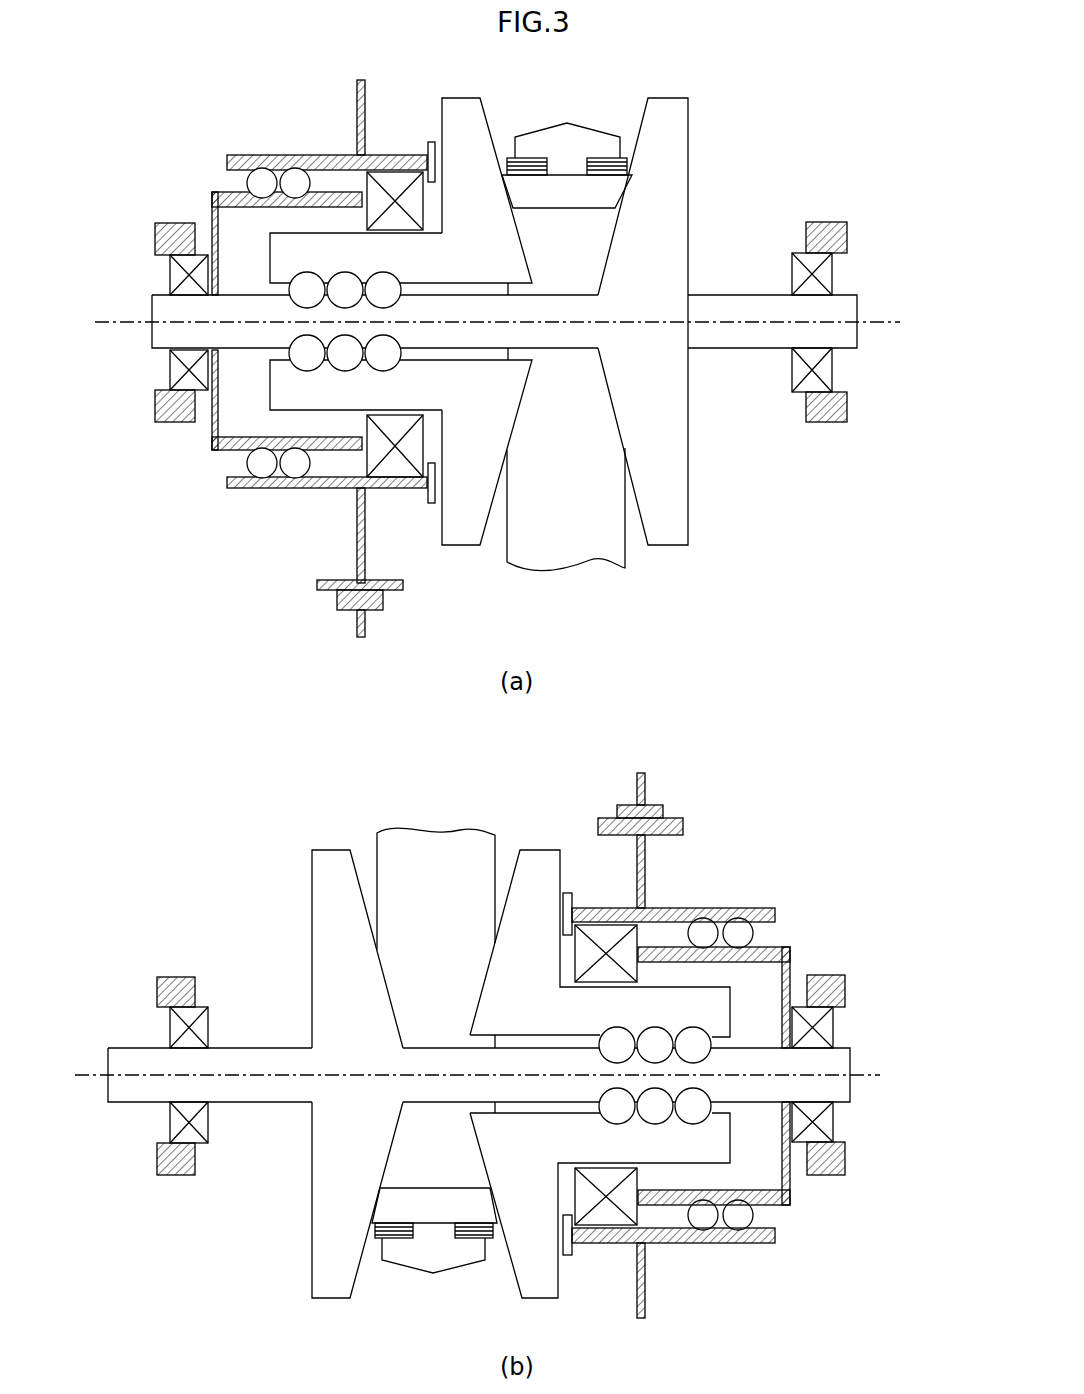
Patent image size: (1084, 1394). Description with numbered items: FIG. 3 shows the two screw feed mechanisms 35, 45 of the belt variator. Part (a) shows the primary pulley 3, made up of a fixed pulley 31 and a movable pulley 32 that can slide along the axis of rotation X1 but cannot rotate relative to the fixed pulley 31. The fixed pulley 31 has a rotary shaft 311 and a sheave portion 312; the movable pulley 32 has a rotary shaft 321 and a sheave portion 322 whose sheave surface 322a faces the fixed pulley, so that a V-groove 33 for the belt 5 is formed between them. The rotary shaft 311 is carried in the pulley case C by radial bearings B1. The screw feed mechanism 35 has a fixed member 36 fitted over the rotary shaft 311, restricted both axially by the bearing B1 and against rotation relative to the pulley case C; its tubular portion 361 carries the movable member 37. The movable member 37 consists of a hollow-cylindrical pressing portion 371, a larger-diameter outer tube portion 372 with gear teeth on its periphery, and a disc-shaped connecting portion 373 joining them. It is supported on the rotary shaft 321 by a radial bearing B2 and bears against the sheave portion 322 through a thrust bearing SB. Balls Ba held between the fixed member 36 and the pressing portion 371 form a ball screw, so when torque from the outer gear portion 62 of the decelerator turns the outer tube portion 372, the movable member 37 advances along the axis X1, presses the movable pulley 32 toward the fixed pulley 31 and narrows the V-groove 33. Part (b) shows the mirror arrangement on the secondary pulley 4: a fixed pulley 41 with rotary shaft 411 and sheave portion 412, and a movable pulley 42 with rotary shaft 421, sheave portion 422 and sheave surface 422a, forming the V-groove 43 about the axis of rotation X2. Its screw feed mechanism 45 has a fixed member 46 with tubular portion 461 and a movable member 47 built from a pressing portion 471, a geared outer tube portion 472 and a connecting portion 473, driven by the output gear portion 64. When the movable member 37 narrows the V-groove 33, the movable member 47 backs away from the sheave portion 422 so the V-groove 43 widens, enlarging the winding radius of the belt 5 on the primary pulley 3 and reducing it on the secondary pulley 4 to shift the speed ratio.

The primary pulley 3 is at (826, 522).
The fixed pulley 31 is at (664, 323).
The rotary shaft 311 is at (170, 330).
The sheave portion 312 is at (688, 430).
The movable pulley 32 is at (401, 365).
The rotary shaft 321 is at (433, 385).
The sheave portion 322 is at (478, 440).
The sheave surface 322a is at (480, 535).
The V-groove 33 is at (584, 428).
The screw feed mechanism 35 is at (436, 667).
The fixed member 36 is at (250, 339).
The tubular portion 361 is at (235, 447).
The movable member 37 is at (305, 346).
The pressing portion 371 is at (236, 490).
The outer tube portion 372 is at (338, 598).
The connecting portion 373 is at (356, 565).
The belt 5 is at (603, 552).
The outer gear portion 62 is at (357, 632).
The radial bearing B1 is at (185, 372).
The radial bearing B2 is at (397, 425).
The balls Ba is at (262, 458).
The thrust bearing SB is at (437, 483).
The pulley case C is at (845, 240).
The axis of rotation X1 is at (514, 322).
The secondary pulley 4 is at (508, 1031).
The fixed pulley 41 is at (315, 1074).
The rotary shaft 411 is at (848, 1090).
The sheave portion 412 is at (325, 975).
The movable pulley 42 is at (575, 1031).
The rotary shaft 421 is at (565, 1015).
The sheave portion 422 is at (520, 955).
The sheave surface 422a is at (505, 865).
The V-groove 43 is at (448, 1017).
The screw feed mechanism 45 is at (742, 1045).
The fixed member 46 is at (753, 1056).
The tubular portion 461 is at (772, 950).
The movable member 47 is at (695, 1021).
The pressing portion 471 is at (720, 908).
The outer tube portion 472 is at (687, 819).
The connecting portion 473 is at (645, 855).
The output gear portion 64 is at (637, 795).
The axis of rotation X2 is at (496, 1075).